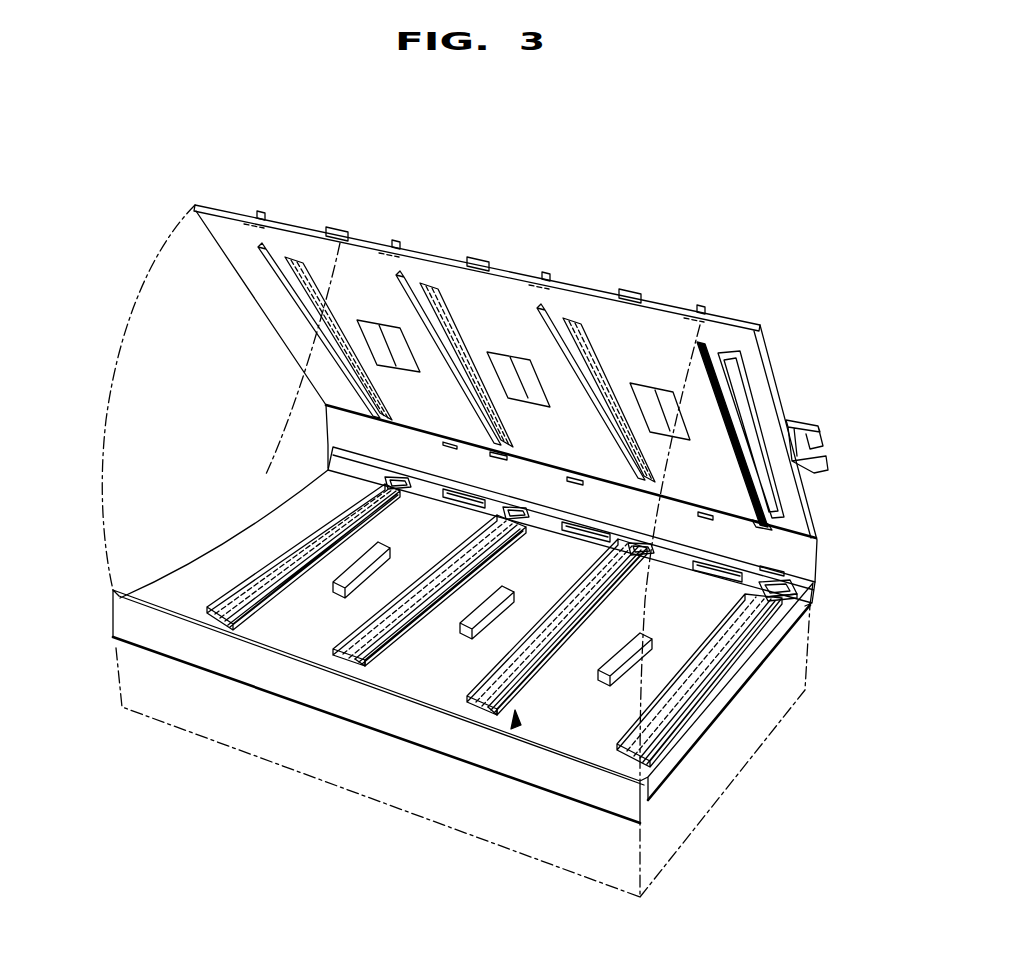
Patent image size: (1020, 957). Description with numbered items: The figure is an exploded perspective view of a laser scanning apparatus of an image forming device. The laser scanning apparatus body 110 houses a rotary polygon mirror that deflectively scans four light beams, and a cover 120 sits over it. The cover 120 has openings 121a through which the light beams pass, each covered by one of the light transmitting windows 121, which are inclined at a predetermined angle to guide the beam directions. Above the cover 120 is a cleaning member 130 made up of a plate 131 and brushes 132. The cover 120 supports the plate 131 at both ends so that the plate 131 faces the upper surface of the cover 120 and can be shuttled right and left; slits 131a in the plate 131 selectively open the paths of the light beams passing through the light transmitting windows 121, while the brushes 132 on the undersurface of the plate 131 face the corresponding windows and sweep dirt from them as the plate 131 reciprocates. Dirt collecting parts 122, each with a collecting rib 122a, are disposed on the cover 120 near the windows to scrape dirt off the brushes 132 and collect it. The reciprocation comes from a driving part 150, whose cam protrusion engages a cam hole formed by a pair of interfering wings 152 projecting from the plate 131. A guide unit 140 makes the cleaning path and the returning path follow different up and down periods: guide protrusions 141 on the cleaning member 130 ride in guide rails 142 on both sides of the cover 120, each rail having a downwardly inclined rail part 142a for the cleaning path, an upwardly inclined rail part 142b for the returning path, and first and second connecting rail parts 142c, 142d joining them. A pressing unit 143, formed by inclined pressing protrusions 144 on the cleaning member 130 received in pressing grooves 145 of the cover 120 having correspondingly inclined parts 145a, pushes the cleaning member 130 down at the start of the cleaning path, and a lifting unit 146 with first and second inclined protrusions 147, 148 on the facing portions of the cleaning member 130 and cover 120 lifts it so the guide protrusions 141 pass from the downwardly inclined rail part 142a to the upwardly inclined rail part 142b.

The laser scanning apparatus body 110 is at (528, 833).
The cover 120 is at (463, 693).
The light transmitting windows 121 is at (333, 631).
The openings 121a is at (363, 677).
The dirt collecting parts 122 is at (480, 716).
The collecting rib 122a is at (515, 726).
The cleaning member 130 is at (539, 387).
The plate 131 is at (506, 396).
The slits 131a is at (567, 320).
The brushes 132 is at (697, 337).
The guide unit 140 is at (448, 414).
The guide protrusions 141 is at (247, 219).
The guide rails 142 is at (472, 520).
The downwardly inclined rail part 142a is at (808, 606).
The upwardly inclined rail part 142b is at (813, 598).
The first connecting rail part 142c is at (805, 584).
The second connecting rail part 142d is at (778, 578).
The pressing unit 143 is at (384, 359).
The pressing protrusions 144 is at (327, 236).
The pressing grooves 145 is at (457, 490).
The inclined parts 145a is at (775, 548).
The lifting unit 146 is at (376, 426).
The first inclined protrusion 147 is at (377, 347).
The second inclined protrusion 148 is at (353, 557).
The driving part 150 is at (830, 414).
The interfering wings 152 is at (814, 418).